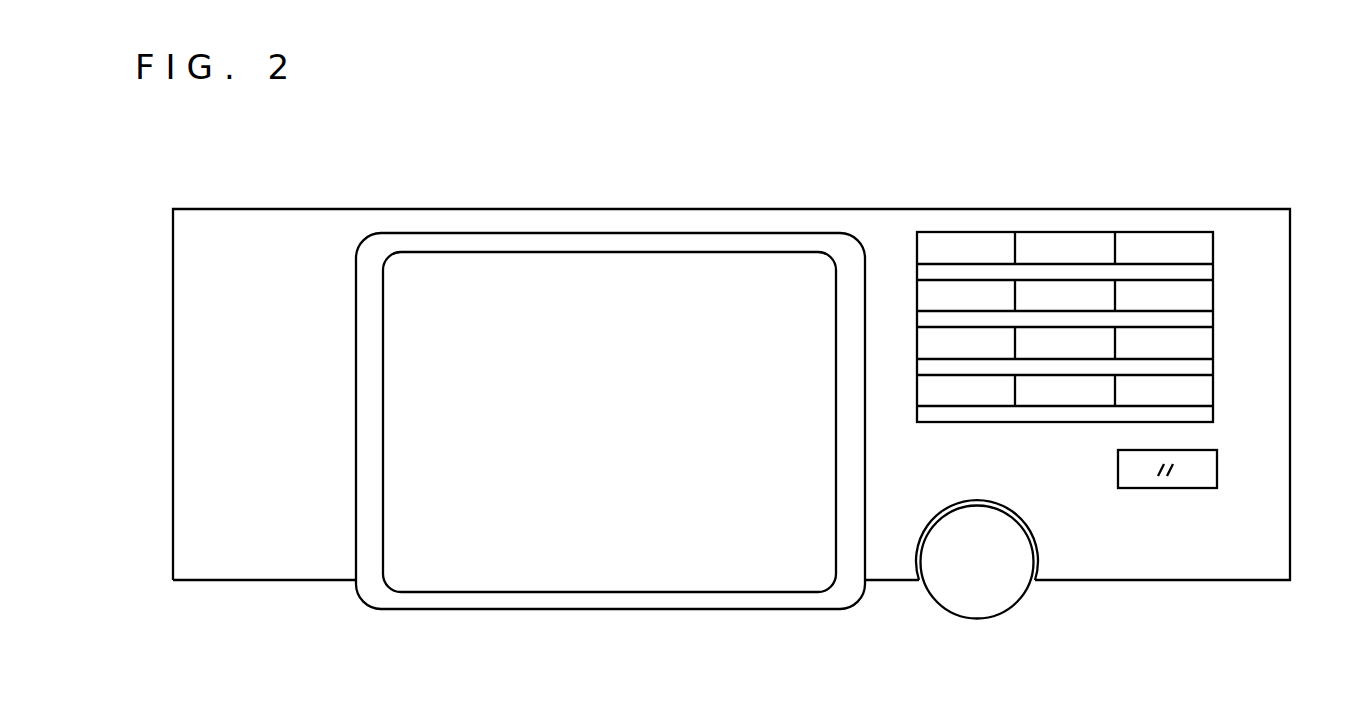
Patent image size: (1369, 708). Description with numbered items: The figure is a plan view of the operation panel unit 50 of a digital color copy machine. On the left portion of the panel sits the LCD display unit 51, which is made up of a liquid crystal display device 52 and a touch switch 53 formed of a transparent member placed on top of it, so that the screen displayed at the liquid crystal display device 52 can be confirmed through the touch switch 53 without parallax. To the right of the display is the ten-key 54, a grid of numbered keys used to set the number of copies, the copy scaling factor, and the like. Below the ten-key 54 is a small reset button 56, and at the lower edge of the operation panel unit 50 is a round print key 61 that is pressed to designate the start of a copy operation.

The operation panel unit 50 is at (719, 145).
The LCD display unit 51 is at (450, 232).
The liquid crystal display device 52 is at (748, 592).
The touch switch 53 is at (649, 582).
The ten-key 54 is at (1083, 232).
The reset button 56 is at (1217, 463).
The print key 61 is at (997, 617).